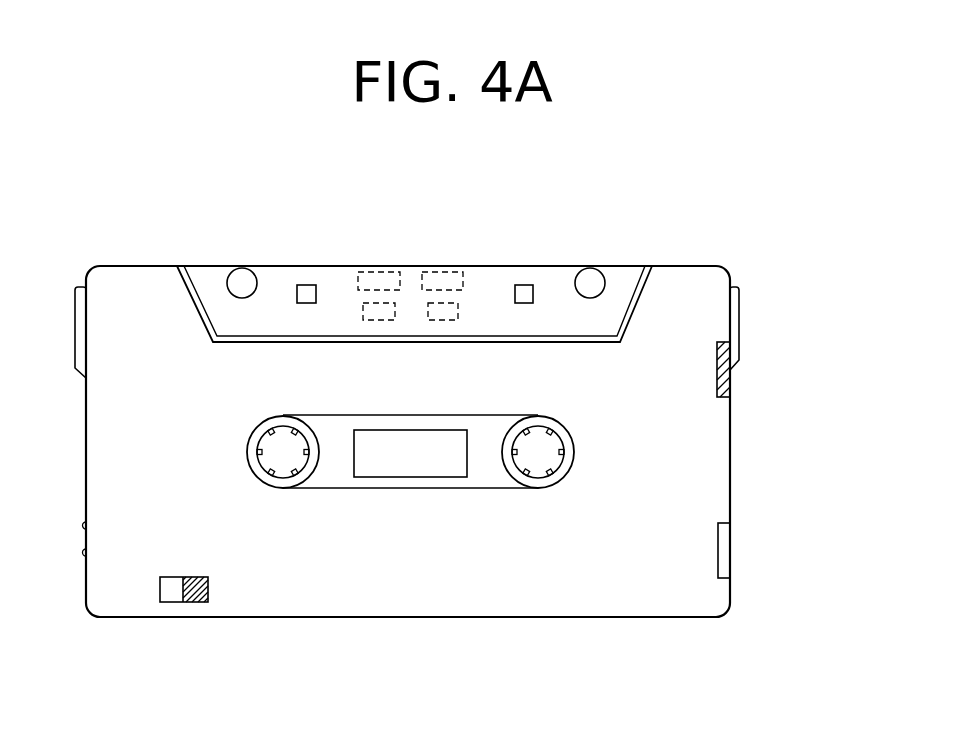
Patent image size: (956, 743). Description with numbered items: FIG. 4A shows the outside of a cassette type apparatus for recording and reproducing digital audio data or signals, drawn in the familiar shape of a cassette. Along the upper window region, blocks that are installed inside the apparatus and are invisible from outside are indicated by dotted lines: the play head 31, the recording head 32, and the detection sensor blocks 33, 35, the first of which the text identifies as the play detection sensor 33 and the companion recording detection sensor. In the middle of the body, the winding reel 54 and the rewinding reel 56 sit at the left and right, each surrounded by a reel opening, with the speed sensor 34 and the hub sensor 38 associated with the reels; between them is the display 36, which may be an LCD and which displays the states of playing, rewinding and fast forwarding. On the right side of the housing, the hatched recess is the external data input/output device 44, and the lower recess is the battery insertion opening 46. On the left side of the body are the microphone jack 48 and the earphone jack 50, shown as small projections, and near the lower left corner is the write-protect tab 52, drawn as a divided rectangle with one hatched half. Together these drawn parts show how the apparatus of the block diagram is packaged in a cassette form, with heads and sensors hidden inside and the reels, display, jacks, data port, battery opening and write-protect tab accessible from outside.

The play head 31 is at (378, 272).
The recording head 32 is at (447, 272).
The play detection sensor 33 is at (376, 320).
The fourth detection hole 35 is at (432, 320).
The play/FF speed sensor 34 is at (293, 470).
The display 36 is at (433, 432).
The take-up reel hub 38 is at (552, 477).
The external data input/output device 44 is at (730, 385).
The battery insertion opening 46 is at (725, 550).
The microphone jack 48 is at (92, 527).
The earphone jack 50 is at (90, 557).
The write-protect tab 52 is at (208, 595).
The winding reel 54 is at (260, 430).
The rewinding reel 56 is at (555, 427).